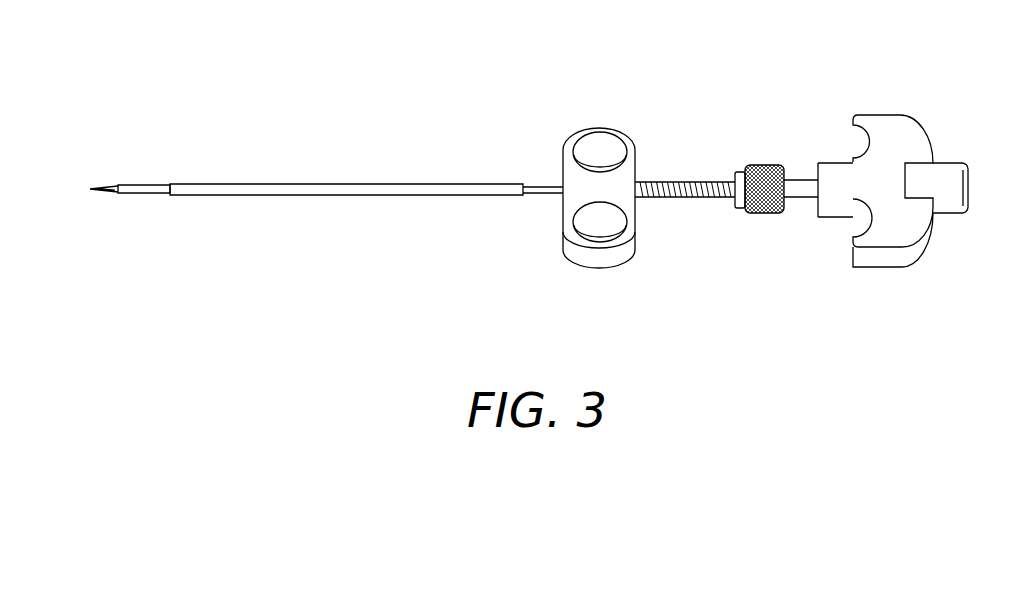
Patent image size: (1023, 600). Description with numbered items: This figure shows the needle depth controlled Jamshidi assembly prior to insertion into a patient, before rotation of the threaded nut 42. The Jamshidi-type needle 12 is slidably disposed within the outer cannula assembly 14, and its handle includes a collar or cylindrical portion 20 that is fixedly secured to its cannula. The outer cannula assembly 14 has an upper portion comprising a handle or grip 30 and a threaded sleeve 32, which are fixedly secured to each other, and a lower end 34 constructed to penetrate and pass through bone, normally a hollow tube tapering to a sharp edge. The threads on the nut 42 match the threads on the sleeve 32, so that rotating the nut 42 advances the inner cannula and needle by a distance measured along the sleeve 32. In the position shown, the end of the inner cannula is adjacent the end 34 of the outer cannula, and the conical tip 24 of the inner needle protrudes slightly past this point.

The Jamshidi-type needle 12 is at (897, 113).
The outer cannula assembly 14 is at (235, 184).
The cylindrical portion 20 is at (795, 179).
The conical tip 24 is at (97, 187).
The handle or grip 30 is at (601, 128).
The threaded sleeve 32 is at (683, 197).
The lower end 34 is at (130, 194).
The threaded nut 42 is at (728, 148).